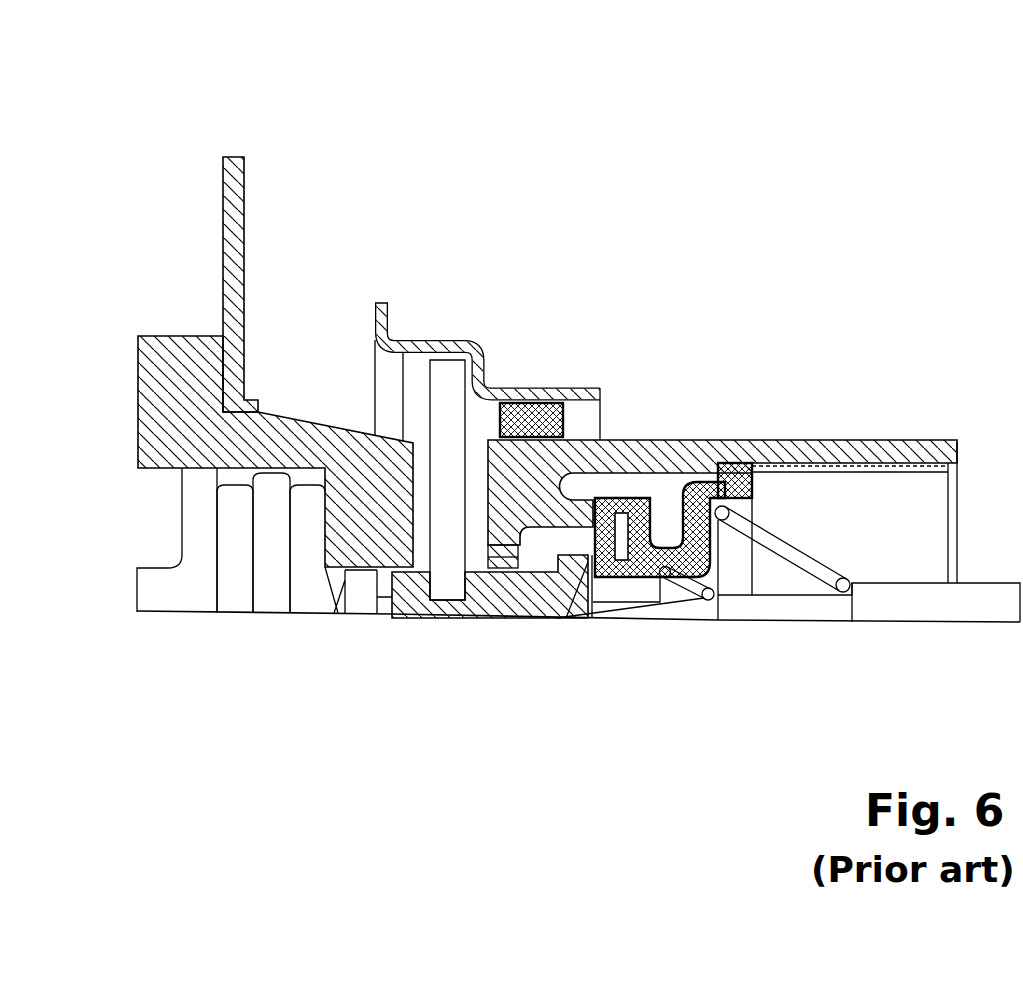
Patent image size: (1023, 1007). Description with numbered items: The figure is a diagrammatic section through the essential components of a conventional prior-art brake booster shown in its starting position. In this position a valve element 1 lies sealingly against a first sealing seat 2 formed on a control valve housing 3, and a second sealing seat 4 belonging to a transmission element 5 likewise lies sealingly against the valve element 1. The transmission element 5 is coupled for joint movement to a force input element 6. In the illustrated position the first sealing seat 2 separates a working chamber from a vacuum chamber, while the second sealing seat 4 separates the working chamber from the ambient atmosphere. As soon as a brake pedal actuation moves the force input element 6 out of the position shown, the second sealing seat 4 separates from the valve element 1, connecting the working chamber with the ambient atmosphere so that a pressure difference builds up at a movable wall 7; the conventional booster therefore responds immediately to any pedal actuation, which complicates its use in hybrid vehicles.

The valve element 1 is at (722, 356).
The first sealing seat 2 is at (673, 353).
The control valve housing 3 is at (231, 369).
The second sealing seat 4 is at (622, 666).
The transmission element 5 is at (475, 681).
The force input element 6 is at (868, 695).
The movable wall 7 is at (253, 221).